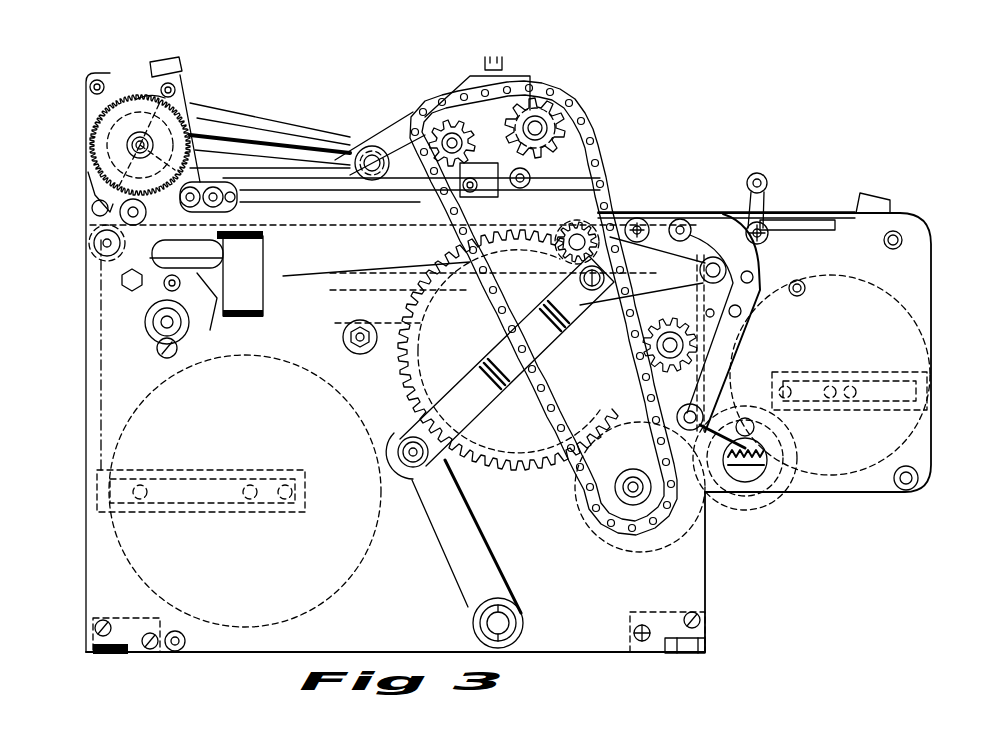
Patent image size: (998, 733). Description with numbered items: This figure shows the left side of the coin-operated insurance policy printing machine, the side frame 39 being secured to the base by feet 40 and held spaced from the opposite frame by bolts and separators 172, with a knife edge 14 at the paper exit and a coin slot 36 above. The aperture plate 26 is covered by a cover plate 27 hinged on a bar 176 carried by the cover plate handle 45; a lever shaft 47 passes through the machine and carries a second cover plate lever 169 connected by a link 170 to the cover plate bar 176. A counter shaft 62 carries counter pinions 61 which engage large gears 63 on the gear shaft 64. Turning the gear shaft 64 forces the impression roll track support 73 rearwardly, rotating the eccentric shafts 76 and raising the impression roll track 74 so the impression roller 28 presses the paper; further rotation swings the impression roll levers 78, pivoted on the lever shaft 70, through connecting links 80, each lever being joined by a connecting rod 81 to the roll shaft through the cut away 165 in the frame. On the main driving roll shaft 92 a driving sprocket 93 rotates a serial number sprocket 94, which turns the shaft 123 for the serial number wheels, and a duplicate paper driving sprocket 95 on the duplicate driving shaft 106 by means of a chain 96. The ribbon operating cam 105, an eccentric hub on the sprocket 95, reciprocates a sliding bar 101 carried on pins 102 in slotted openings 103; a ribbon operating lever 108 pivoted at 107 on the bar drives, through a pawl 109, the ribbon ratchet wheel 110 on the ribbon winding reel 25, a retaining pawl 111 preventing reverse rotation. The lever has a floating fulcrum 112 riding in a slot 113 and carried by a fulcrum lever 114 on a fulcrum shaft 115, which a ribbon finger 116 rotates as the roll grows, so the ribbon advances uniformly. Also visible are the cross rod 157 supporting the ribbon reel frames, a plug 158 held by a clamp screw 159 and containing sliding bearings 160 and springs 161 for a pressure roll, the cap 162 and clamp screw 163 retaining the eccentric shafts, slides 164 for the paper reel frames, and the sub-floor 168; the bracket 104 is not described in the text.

The knife edge 14 is at (707, 496).
The ribbon winding reel 25 is at (133, 145).
The aperture plate 26 is at (668, 220).
The cover plate 27 is at (702, 216).
The impression roller 28 is at (645, 220).
The coin slot 36 is at (878, 197).
The side frame 39 is at (100, 390).
The feet 40 is at (100, 650).
The cover plate handle 45 is at (765, 184).
The lever shaft 47 is at (703, 411).
The counter pinions 61 is at (697, 371).
The counter shaft 62 is at (690, 347).
The large gear 63 is at (512, 470).
The gear shaft 64 is at (490, 352).
The lever shaft 70 is at (490, 623).
The impression roll track support 73 is at (217, 300).
The impression roll track 74 is at (277, 280).
The eccentric shafts 76 is at (163, 322).
The impression roll levers 78 is at (445, 548).
The connecting links 80 is at (435, 398).
The connecting rod 81 is at (642, 255).
The main driving roll shaft 92 is at (630, 492).
The driving sprocket 93 is at (625, 505).
The serial number sprocket 94 is at (541, 126).
The duplicate paper driving sprocket 95 is at (452, 136).
The chain 96 is at (592, 140).
The sliding bar 101 is at (298, 222).
The pins 102 is at (520, 200).
The slotted openings 103 is at (224, 207).
The bracket 104 is at (500, 88).
The ribbon operating cam 105 is at (478, 76).
The duplicate driving shaft 106 is at (425, 115).
The pivot 107 is at (186, 206).
The ribbon operating lever 108 is at (185, 92).
The pawl 109 is at (133, 92).
The ribbon ratchet wheel 110 is at (108, 127).
The retaining pawl 111 is at (90, 182).
The floating fulcrum 112 is at (220, 112).
The slot 113 is at (190, 115).
The fulcrum lever 114 is at (250, 163).
The fulcrum shaft 115 is at (375, 148).
The ribbon finger 116 is at (265, 150).
The shaft 123 is at (488, 170).
The cross rod 157 is at (803, 291).
The plug 158 is at (400, 230).
The clamp screw 159 is at (752, 430).
The sliding bearings 160 is at (766, 455).
The springs 161 is at (766, 467).
The cap 162 is at (168, 285).
The clamp screw 163 is at (160, 349).
The slides 164 is at (110, 490).
The cut away 165 is at (150, 258).
The sub-floor 168 is at (335, 88).
The second cover plate lever 169 is at (737, 312).
The link 170 is at (756, 176).
The bolts and separators 172 is at (905, 240).
The cover plate bar 176 is at (765, 222).